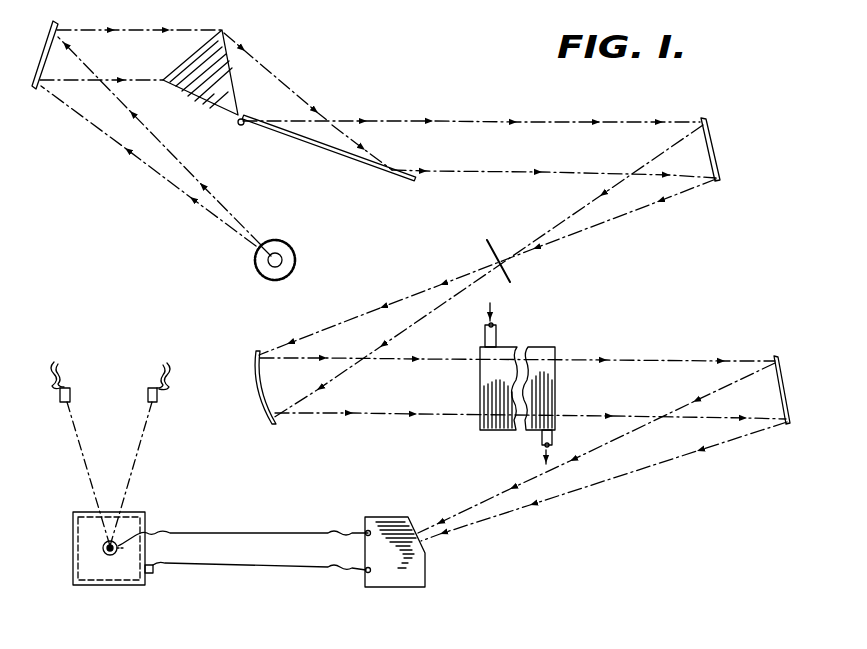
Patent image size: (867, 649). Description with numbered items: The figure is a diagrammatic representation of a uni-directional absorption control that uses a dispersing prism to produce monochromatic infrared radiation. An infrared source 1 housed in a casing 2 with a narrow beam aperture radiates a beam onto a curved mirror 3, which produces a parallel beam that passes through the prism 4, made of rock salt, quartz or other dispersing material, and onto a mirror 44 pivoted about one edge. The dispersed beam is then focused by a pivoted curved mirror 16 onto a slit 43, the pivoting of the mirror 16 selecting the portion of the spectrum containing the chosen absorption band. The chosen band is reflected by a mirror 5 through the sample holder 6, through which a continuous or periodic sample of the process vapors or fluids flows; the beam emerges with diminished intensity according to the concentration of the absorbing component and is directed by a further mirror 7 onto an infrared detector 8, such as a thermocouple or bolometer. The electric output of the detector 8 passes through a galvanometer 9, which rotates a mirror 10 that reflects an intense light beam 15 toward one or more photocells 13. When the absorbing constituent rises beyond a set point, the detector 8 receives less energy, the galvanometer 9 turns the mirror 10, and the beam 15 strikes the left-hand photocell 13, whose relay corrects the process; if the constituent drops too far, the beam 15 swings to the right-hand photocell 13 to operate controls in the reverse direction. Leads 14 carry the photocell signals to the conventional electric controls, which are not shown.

The infrared source 1 is at (214, 258).
The casing 2 is at (291, 247).
The curved mirror 3 is at (67, 8).
The prism 4 is at (224, 29).
The mirror 44 is at (310, 143).
The curved mirror 16 is at (730, 200).
The slit 43 is at (498, 258).
The mirror 5 is at (273, 425).
The sample holder 6 is at (577, 320).
The mirror 7 is at (788, 425).
The infrared detector 8 is at (427, 586).
The galvanometer device 9 is at (115, 570).
The mirror 10 is at (103, 548).
The photocells 13 is at (148, 395).
The lamp leads 14 is at (112, 366).
The reflected beam 15 is at (109, 474).